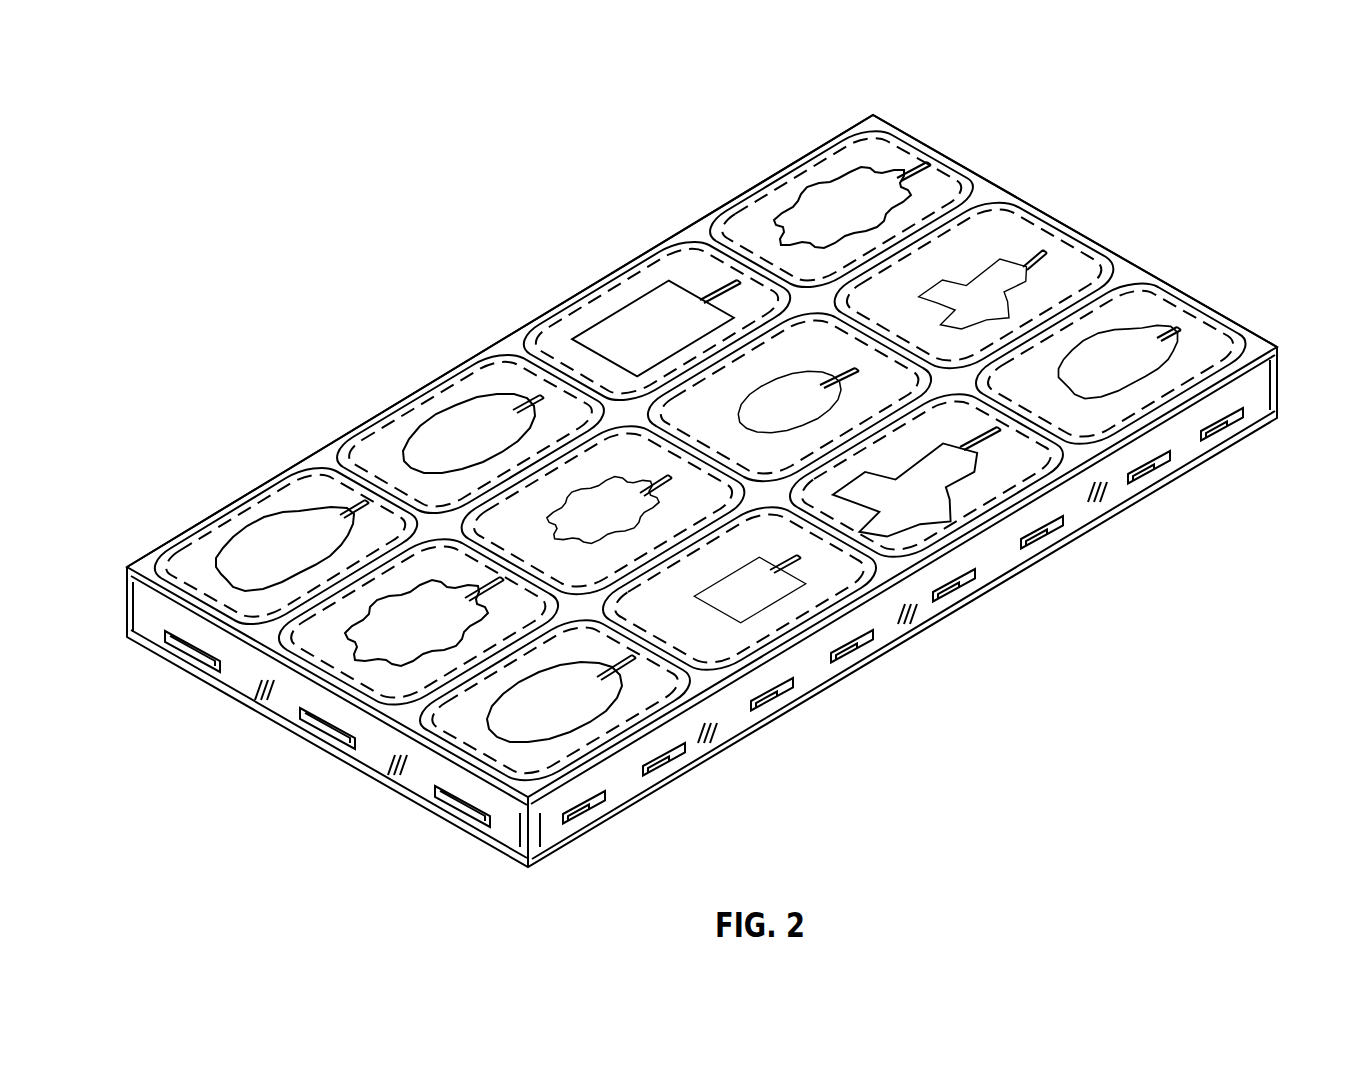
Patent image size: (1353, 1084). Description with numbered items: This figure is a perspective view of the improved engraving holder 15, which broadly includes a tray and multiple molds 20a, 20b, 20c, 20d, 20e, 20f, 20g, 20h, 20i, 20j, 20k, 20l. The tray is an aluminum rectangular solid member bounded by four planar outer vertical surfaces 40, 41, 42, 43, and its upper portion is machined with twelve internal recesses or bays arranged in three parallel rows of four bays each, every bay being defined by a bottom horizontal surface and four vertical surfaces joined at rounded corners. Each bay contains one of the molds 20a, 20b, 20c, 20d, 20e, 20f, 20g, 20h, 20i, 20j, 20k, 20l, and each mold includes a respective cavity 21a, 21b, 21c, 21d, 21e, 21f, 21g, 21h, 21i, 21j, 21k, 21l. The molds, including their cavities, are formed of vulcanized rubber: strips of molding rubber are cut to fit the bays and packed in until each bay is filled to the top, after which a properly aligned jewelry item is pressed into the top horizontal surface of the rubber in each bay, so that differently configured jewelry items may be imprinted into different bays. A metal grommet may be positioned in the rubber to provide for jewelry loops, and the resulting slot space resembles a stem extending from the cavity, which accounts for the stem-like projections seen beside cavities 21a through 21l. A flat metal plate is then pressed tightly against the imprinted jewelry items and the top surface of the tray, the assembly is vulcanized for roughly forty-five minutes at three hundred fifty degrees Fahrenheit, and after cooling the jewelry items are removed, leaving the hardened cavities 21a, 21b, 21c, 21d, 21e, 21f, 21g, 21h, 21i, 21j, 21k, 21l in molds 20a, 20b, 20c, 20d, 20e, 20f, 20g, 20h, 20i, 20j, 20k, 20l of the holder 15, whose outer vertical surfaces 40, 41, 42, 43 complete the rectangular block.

The engraving holder 15 is at (325, 263).
The mold 20a is at (190, 564).
The mold 20b is at (380, 450).
The mold 20c is at (552, 334).
The mold 20d is at (748, 220).
The mold 20e is at (333, 650).
The mold 20f is at (584, 568).
The mold 20g is at (788, 452).
The mold 20h is at (1076, 276).
The mold 20i is at (490, 735).
The mold 20j is at (807, 600).
The mold 20k is at (1000, 477).
The mold 20l is at (1214, 339).
The cavity 21a is at (300, 567).
The cavity 21b is at (497, 451).
The cavity 21c is at (683, 342).
The cavity 21d is at (880, 224).
The cavity 21e is at (450, 644).
The cavity 21f is at (640, 529).
The cavity 21g is at (815, 414).
The cavity 21h is at (1008, 302).
The cavity 21i is at (580, 724).
The cavity 21j is at (763, 604).
The cavity 21k is at (945, 492).
The cavity 21l is at (1136, 384).
The planar outer vertical surface 40 is at (606, 783).
The planar outer vertical surface 41 is at (318, 722).
The planar outer vertical surface 42 is at (621, 241).
The planar outer vertical surface 43 is at (1189, 255).